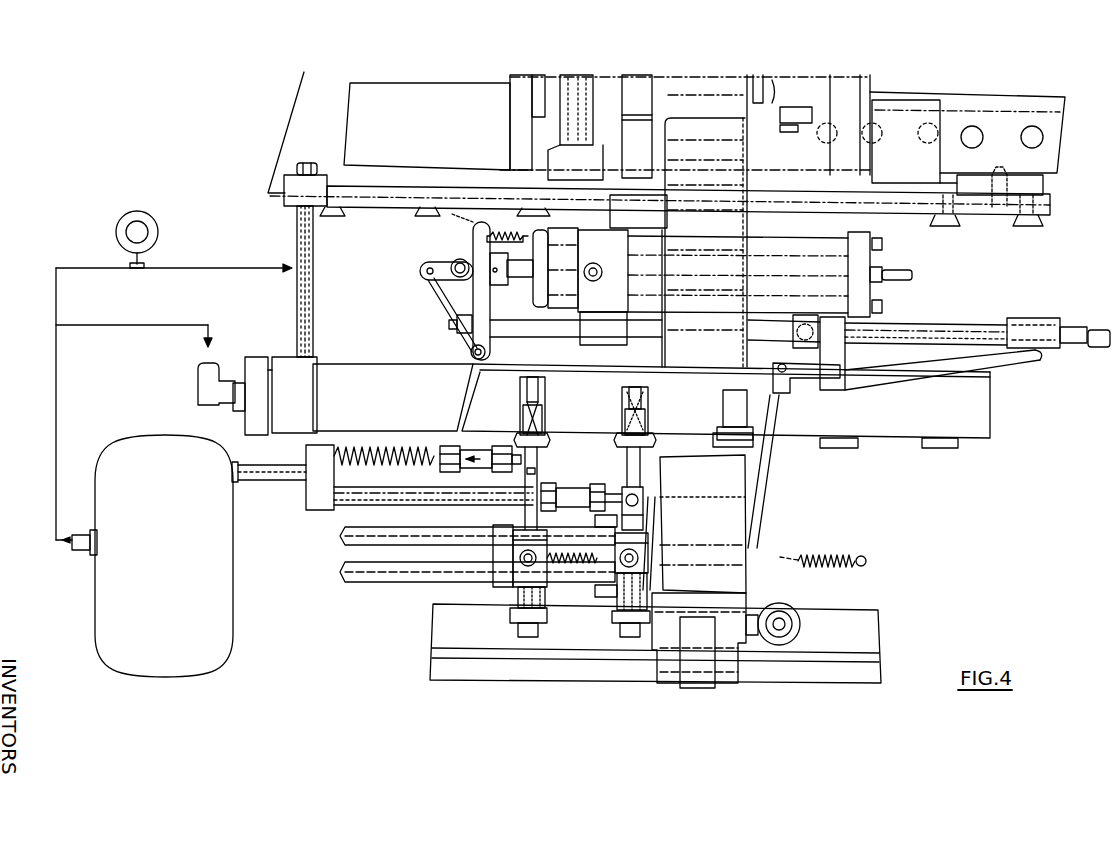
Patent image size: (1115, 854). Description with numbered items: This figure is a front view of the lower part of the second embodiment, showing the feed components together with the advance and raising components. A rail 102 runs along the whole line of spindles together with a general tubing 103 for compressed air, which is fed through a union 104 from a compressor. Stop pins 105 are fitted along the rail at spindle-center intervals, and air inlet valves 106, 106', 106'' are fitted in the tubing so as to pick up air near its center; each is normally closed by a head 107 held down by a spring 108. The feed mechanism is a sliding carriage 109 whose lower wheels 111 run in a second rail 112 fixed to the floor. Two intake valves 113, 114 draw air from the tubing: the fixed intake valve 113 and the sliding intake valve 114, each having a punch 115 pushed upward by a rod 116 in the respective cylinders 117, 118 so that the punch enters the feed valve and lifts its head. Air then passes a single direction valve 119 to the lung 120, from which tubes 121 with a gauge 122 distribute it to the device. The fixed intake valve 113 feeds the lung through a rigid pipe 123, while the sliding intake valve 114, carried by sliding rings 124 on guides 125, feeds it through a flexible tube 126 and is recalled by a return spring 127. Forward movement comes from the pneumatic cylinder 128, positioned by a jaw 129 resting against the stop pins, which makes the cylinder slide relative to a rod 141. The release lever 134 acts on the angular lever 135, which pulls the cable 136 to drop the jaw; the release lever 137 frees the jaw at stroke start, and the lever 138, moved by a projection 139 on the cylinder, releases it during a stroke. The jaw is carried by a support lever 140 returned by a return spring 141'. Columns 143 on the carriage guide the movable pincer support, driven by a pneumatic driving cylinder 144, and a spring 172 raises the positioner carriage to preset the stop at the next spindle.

The rail 102 is at (302, 139).
The general tubing 103 is at (373, 374).
The union 104 is at (210, 389).
The stop pins 105 is at (335, 214).
The air inlet valve 106 is at (550, 448).
The second feed valve 106' is at (619, 448).
The third feed valve 106'' is at (716, 448).
The head 107 is at (510, 400).
The spring 108 is at (607, 406).
The sliding carriage 109 is at (752, 500).
The lower wheels 111 is at (729, 668).
The second rail 112 is at (676, 643).
The fixed intake valve 113 is at (641, 516).
The sliding intake valve 114 is at (557, 486).
The punch 115 is at (649, 458).
The rod 116 is at (533, 513).
The cylinder 117 is at (628, 594).
The cylinder 118 is at (522, 587).
The single direction valve 119 is at (580, 482).
The lung 120 is at (217, 588).
The tubes 121 is at (79, 537).
The gauge 122 is at (151, 226).
The rigid pipe 123 is at (419, 486).
The sliding rings 124 is at (506, 567).
The guides 125 is at (348, 534).
The flexible tube 126 is at (384, 469).
The return spring 127 is at (571, 573).
The pneumatic cylinder 128 is at (853, 294).
The jaw 129 is at (460, 218).
The release lever 134 is at (995, 361).
The angular lever 135 is at (826, 350).
The cable 136 is at (458, 321).
The release lever 137 is at (790, 388).
The lever 138 is at (798, 308).
The projection 139 is at (853, 266).
The support lever 140 is at (473, 311).
The rod 141 is at (544, 268).
The return spring 141' is at (511, 247).
The columns 143 is at (876, 86).
The pneumatic driving cylinder 144 is at (722, 543).
The spring 172 is at (634, 147).